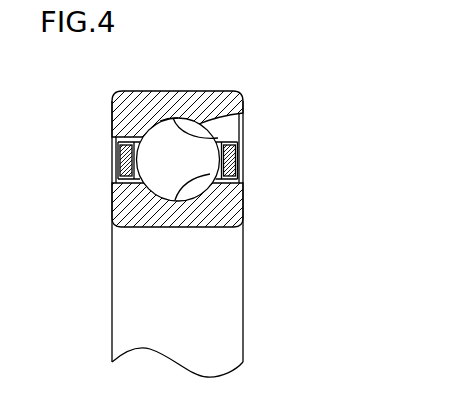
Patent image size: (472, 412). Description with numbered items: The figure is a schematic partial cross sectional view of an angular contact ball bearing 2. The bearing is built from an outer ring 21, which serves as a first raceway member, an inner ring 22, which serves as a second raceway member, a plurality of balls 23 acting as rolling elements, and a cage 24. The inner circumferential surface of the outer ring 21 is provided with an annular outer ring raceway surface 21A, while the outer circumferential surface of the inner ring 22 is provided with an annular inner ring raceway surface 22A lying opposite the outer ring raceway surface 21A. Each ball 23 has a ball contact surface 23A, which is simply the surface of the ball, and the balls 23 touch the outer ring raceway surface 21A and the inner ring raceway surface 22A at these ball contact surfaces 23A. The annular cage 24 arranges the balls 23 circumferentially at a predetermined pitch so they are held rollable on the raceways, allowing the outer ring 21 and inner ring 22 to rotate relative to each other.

The angular contact ball bearing 2 is at (248, 102).
The outer ring 21 is at (126, 120).
The outer ring raceway surface 21A is at (216, 137).
The inner ring 22 is at (128, 203).
The inner ring raceway surface 22A is at (208, 176).
The ball 23 is at (162, 160).
The ball contact surface 23A is at (160, 121).
The cage 24 is at (234, 155).